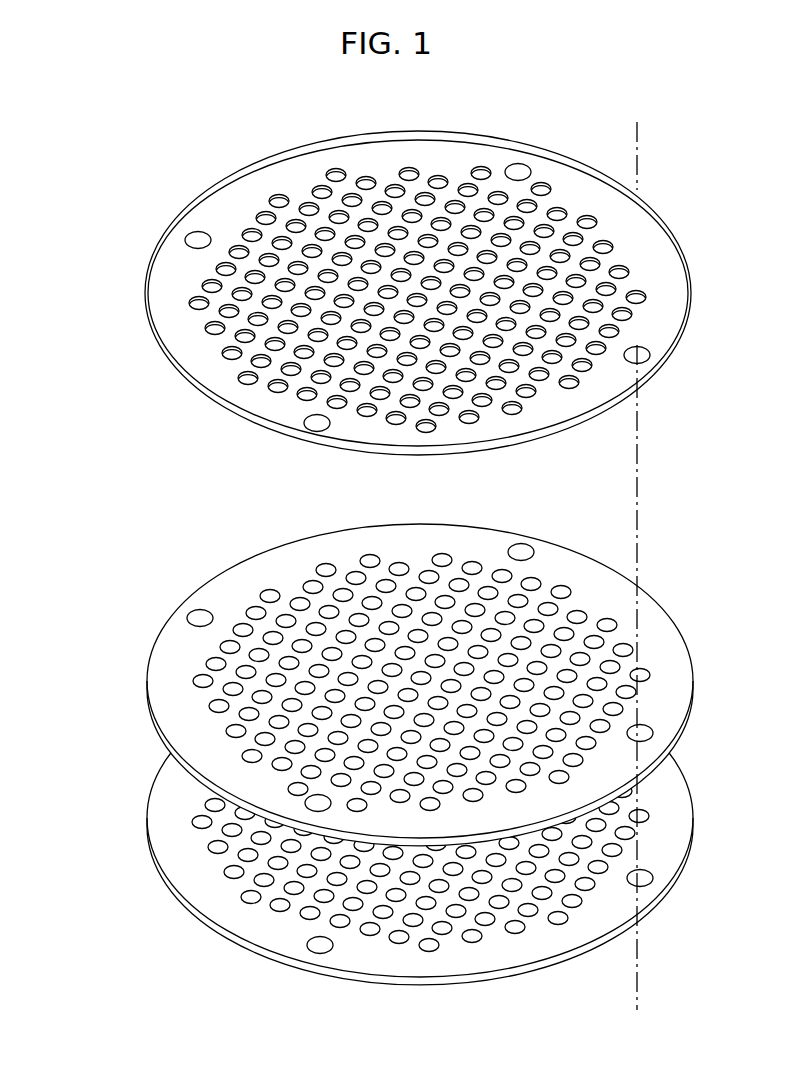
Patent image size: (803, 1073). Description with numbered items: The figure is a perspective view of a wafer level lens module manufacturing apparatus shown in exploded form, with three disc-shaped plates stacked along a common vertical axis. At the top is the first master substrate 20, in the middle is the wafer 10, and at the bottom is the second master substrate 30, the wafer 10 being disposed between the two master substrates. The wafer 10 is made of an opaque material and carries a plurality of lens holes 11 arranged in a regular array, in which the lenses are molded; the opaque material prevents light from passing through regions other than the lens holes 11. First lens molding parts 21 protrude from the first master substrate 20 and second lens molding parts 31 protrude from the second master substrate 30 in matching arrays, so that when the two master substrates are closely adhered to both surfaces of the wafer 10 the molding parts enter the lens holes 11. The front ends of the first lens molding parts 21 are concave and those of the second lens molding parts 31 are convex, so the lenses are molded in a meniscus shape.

The wafer 10 is at (167, 608).
The lens holes 11 is at (313, 587).
The first master substrate 20 is at (143, 377).
The first lens molding parts 21 is at (278, 388).
The second master substrate 30 is at (147, 787).
The second lens molding parts 31 is at (248, 900).